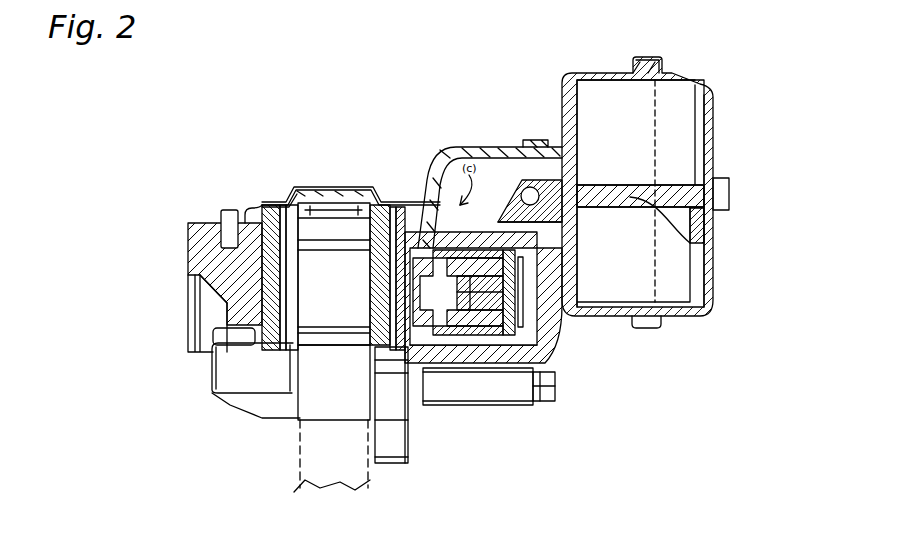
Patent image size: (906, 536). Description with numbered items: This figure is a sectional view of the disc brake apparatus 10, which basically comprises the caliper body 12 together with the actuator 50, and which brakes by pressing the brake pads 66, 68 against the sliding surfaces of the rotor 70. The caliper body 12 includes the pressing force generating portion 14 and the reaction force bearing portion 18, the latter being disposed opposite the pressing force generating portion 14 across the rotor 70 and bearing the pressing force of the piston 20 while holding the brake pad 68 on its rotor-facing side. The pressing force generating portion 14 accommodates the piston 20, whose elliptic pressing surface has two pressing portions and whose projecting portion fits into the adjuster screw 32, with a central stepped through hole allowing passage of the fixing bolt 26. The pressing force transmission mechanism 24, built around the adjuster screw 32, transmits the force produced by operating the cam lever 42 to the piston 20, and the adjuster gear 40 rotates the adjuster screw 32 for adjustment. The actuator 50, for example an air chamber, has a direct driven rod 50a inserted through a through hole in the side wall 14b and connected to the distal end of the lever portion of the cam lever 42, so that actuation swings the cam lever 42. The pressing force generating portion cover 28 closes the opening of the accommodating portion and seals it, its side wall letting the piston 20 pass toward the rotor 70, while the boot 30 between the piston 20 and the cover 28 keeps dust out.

The disc brake apparatus 10 is at (235, 136).
The caliper body 12 is at (185, 251).
The pressing force generating portion 14 is at (500, 347).
The side wall 14b is at (550, 279).
The reaction force bearing portion 18 is at (215, 297).
The piston 20 is at (425, 258).
The pressing force transmission mechanism 24 is at (472, 340).
The fixing bolt 26 is at (385, 285).
The pressing force generating portion cover 28 is at (527, 140).
The boot 30 is at (365, 358).
The adjuster screw 32 is at (540, 350).
The adjuster gear 40 is at (560, 327).
The cam lever 42 is at (490, 157).
The actuator 50 is at (712, 100).
The direct driven rod 50a is at (690, 243).
The brake pad 66 is at (390, 200).
The brake pad 68 is at (283, 205).
The rotor 70 is at (392, 470).